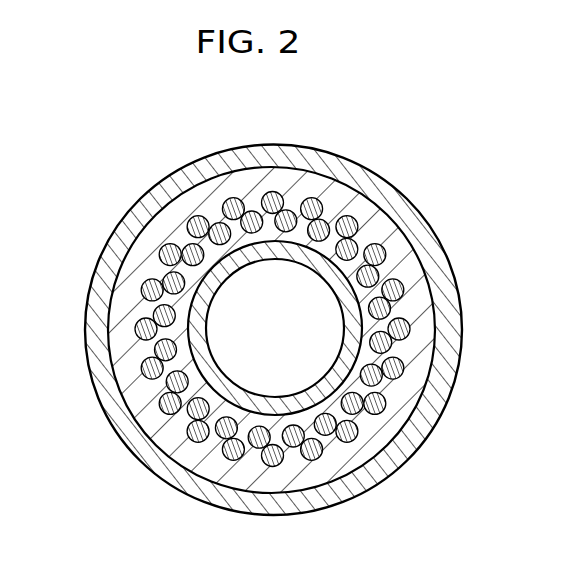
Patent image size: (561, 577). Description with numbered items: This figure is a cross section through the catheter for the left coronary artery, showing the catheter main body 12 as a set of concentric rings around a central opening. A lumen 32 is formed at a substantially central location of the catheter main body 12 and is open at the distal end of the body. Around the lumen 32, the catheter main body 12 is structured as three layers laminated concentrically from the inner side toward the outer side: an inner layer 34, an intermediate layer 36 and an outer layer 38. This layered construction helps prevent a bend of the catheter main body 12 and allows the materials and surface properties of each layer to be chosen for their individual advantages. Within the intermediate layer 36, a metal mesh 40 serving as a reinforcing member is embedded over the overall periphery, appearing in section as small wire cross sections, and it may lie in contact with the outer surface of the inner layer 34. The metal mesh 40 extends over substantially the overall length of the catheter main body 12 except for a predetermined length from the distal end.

The catheter main body 12 is at (86, 290).
The lumen 32 is at (247, 298).
The inner layer 34 is at (235, 260).
The intermediate layer 36 is at (417, 286).
The outer layer 38 is at (269, 329).
The metal mesh 40 is at (348, 442).